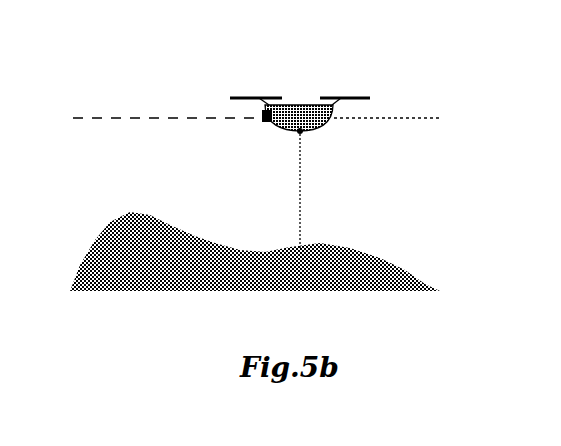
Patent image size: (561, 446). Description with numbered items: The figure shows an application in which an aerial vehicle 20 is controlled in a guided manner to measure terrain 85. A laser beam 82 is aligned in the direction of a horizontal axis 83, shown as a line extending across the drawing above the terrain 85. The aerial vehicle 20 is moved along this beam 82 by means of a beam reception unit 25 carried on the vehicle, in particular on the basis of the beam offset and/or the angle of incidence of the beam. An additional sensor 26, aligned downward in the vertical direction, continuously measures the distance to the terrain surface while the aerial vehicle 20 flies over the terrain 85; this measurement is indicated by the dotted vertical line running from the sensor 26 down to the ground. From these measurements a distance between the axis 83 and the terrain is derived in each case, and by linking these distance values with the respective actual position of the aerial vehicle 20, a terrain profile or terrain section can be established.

The aerial vehicle 20 is at (301, 88).
The beam reception unit 25 is at (246, 142).
The additional sensor 26 is at (352, 153).
The laser beam 82 is at (168, 102).
The horizontal axis 83 is at (398, 102).
The terrain 85 is at (266, 251).